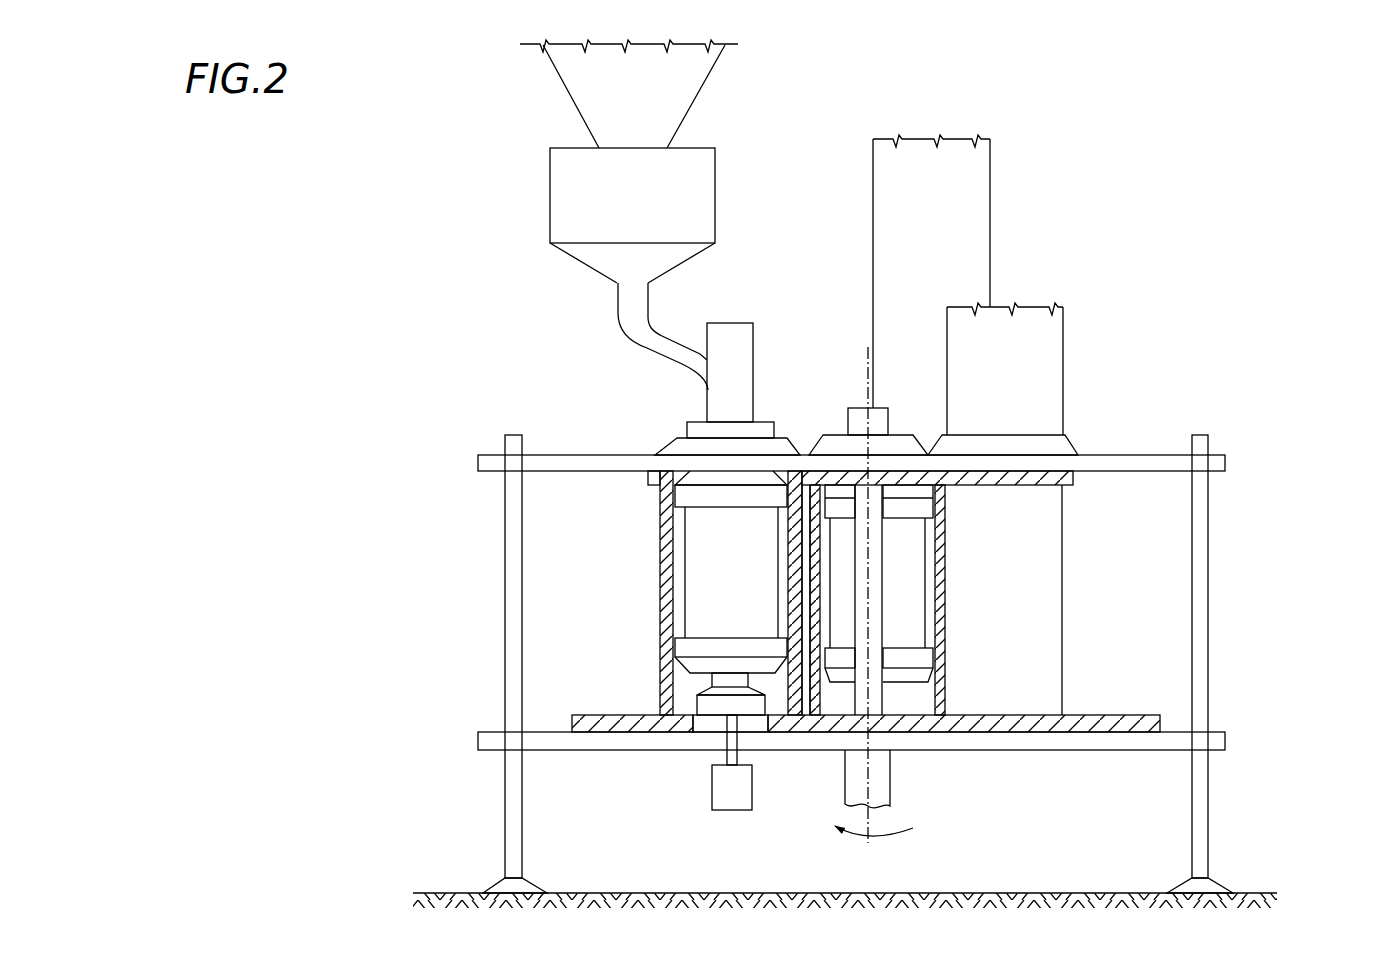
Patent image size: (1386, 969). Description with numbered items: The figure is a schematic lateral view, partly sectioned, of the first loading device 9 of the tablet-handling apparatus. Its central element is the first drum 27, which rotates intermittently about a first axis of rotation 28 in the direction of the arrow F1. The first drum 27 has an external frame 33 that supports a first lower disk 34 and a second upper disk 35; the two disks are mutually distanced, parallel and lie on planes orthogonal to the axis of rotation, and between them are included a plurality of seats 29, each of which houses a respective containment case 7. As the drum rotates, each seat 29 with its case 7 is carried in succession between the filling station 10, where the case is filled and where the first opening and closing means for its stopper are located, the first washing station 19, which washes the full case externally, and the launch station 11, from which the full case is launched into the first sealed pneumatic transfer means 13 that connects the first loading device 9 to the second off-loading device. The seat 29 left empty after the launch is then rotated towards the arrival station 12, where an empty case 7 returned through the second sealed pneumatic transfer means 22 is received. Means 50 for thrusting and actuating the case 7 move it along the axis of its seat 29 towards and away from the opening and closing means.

The containment case 7 is at (700, 540).
The first loading device 9 is at (1100, 428).
The filling station 10 is at (698, 418).
The launch station 11 is at (845, 398).
The arrival station 12 is at (1077, 508).
The first sealed pneumatic transfer means 13 is at (1003, 337).
The first washing station 19 is at (915, 428).
The second sealed pneumatic transfer means 22 is at (962, 160).
The first drum 27 is at (590, 657).
The first axis of rotation 28 is at (868, 422).
The seat 29 is at (658, 573).
The external frame 33 is at (502, 797).
The first lower disk 34 is at (978, 723).
The second upper disk 35 is at (1073, 477).
The thrusting and actuating means 50 is at (728, 796).
The arrow of drum rotation F1 is at (900, 832).